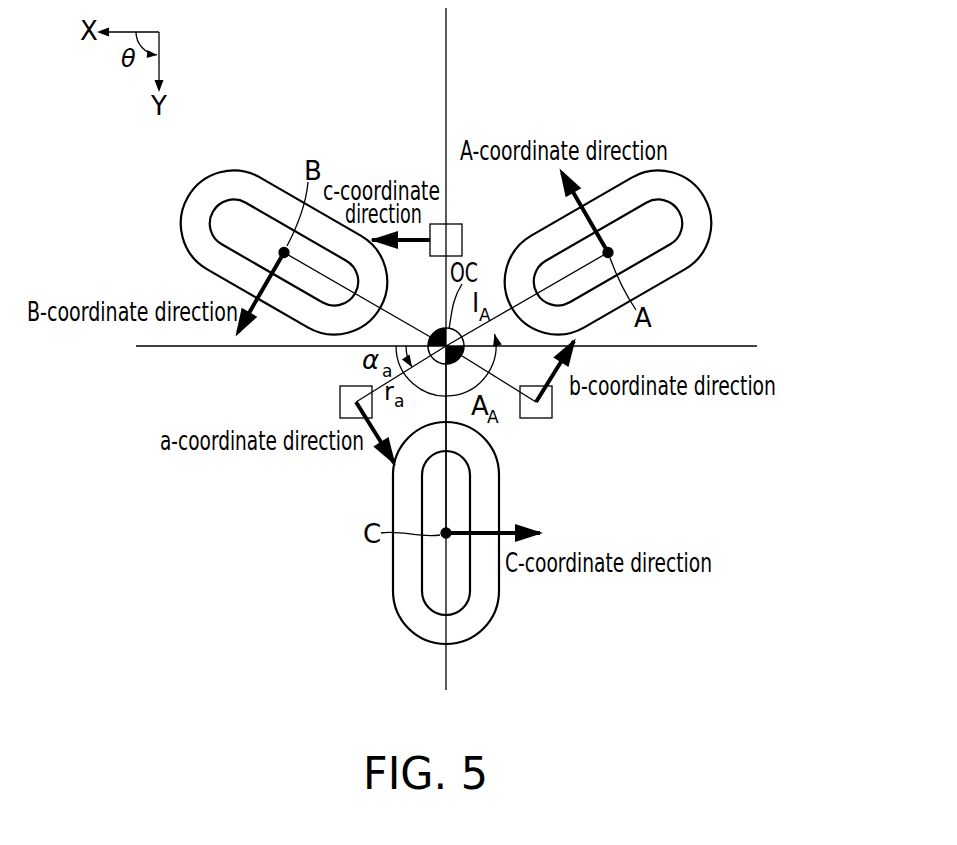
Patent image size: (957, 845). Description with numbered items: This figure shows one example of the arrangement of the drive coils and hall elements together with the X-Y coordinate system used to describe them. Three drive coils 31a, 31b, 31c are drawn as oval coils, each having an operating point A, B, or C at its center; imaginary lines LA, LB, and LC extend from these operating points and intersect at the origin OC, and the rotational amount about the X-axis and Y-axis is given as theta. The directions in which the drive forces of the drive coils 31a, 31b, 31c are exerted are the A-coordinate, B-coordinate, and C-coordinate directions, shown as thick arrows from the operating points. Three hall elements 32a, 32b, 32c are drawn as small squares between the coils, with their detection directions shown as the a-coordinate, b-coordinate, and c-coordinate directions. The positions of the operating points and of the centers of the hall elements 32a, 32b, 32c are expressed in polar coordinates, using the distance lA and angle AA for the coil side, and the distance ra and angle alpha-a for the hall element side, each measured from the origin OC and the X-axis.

The drive coil 31a is at (713, 212).
The drive coil 31b is at (258, 168).
The drive coil 31c is at (391, 588).
The hall element 32a is at (340, 396).
The hall element 32b is at (540, 418).
The hall element 32c is at (457, 224).